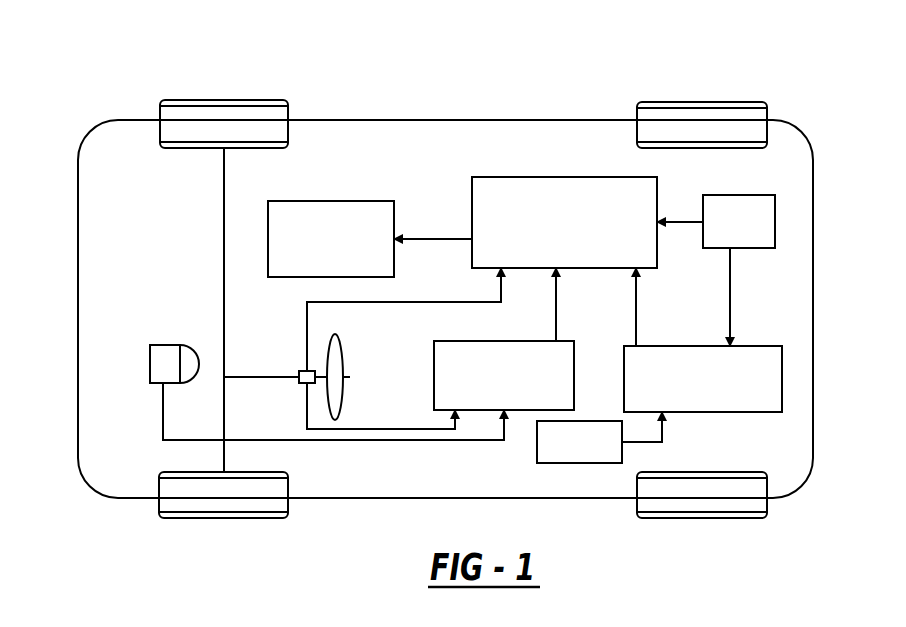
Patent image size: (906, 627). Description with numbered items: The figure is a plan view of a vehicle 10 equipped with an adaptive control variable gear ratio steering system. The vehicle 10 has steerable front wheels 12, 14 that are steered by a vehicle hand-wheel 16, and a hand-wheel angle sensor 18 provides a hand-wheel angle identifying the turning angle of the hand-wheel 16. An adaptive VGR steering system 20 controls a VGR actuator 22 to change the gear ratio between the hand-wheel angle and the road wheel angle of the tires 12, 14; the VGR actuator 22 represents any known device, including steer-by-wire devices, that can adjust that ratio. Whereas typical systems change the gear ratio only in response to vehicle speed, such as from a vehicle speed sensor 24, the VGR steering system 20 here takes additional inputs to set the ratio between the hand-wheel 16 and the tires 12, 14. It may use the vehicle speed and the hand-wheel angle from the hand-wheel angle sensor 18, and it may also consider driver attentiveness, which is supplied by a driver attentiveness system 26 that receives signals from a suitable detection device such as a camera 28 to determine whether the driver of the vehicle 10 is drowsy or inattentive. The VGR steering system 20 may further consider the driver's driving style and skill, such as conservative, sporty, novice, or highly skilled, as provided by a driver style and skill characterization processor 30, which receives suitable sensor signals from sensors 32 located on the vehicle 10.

The vehicle 10 is at (452, 83).
The steerable front wheel 12 is at (224, 100).
The steerable front wheel 14 is at (232, 518).
The vehicle hand-wheel 16 is at (350, 377).
The hand-wheel angle sensor 18 is at (305, 371).
The adaptive VGR steering system 20 is at (528, 177).
The VGR actuator 22 is at (318, 201).
The vehicle speed sensor 24 is at (730, 195).
The driver attentiveness system 26 is at (434, 360).
The camera 28 is at (165, 345).
The driver style and skill characterization processor 30 is at (750, 346).
The sensors 32 is at (538, 447).